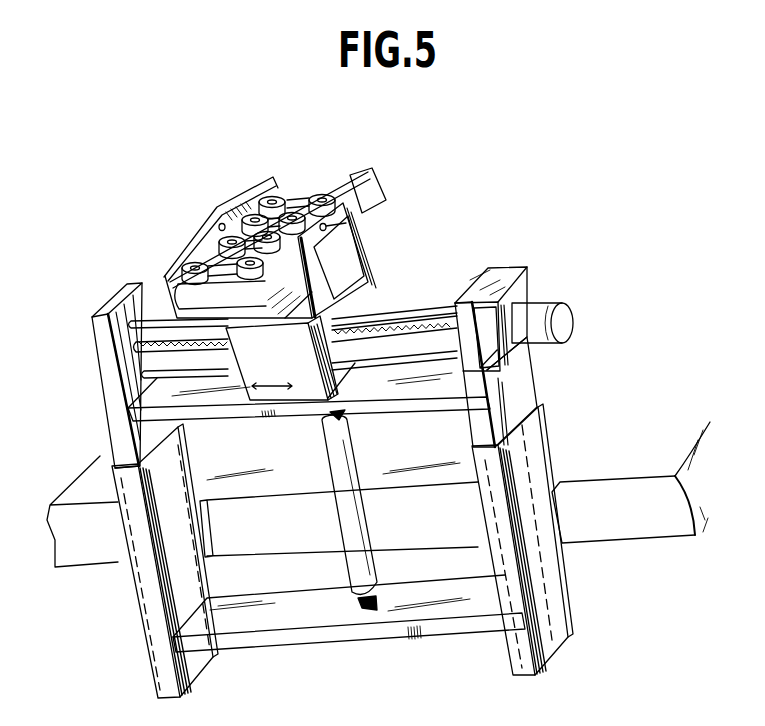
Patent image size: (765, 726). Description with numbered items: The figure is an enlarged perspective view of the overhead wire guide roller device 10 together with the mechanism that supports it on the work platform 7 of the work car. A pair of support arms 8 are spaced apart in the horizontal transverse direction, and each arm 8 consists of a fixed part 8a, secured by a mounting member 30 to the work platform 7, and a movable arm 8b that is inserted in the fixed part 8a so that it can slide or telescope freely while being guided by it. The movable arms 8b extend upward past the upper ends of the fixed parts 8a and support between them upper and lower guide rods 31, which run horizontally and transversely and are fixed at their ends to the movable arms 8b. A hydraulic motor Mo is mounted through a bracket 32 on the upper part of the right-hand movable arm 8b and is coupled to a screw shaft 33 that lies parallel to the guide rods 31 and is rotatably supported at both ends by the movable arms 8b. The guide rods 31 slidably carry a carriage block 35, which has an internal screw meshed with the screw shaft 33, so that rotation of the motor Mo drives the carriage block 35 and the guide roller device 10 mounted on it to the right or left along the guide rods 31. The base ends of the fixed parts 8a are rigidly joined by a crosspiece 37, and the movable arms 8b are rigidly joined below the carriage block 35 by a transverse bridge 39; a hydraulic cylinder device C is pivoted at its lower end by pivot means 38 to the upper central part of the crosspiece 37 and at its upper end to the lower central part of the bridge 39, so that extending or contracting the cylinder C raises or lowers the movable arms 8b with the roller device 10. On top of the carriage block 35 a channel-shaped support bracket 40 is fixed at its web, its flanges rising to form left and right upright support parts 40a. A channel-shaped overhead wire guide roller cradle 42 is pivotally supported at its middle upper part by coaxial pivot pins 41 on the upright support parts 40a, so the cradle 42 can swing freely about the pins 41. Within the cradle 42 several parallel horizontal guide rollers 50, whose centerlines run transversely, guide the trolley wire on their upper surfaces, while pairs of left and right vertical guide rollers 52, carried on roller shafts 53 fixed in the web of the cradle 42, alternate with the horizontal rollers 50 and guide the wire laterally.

The work platform 7 is at (639, 525).
The support arm 8 is at (120, 551).
The fixed part 8a is at (133, 590).
The movable arm 8b is at (108, 405).
The overhead wire guide roller device 10 is at (371, 159).
The mounting member 30 is at (207, 518).
The guide rod 31 is at (388, 303).
The bracket 32 is at (530, 273).
The screw shaft 33 is at (427, 327).
The carriage block 35 is at (302, 388).
The crosspiece 37 is at (310, 623).
The pivot means 38 is at (370, 612).
The transverse bridge 39 is at (438, 385).
The support bracket 40 is at (346, 246).
The upright support part 40a is at (333, 200).
The pivot pin 41 is at (217, 206).
The overhead wire guide roller cradle 42 is at (264, 175).
The horizontal guide roller 50 is at (301, 208).
The vertical guide roller 52 is at (227, 235).
The roller shaft 53 is at (222, 237).
The hydraulic cylinder device C is at (348, 527).
The hydraulic motor Mo is at (570, 320).